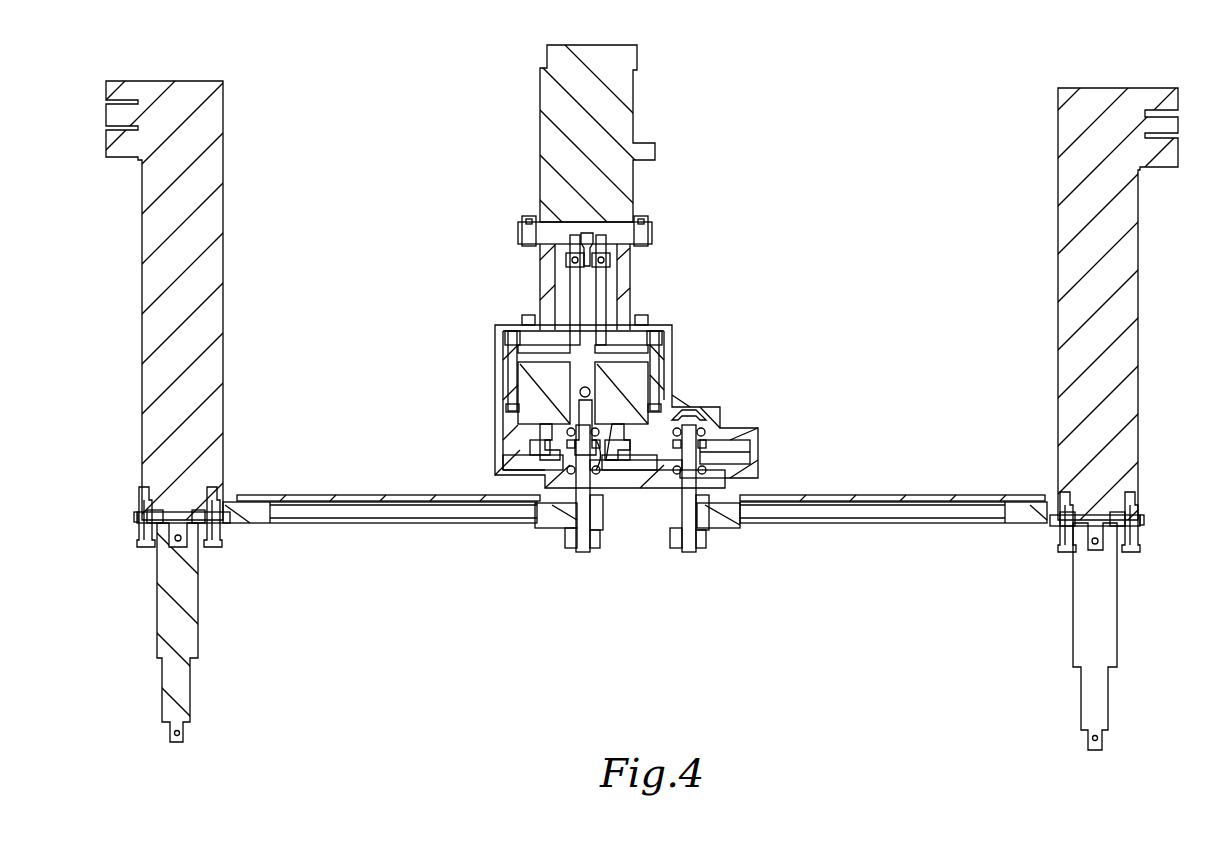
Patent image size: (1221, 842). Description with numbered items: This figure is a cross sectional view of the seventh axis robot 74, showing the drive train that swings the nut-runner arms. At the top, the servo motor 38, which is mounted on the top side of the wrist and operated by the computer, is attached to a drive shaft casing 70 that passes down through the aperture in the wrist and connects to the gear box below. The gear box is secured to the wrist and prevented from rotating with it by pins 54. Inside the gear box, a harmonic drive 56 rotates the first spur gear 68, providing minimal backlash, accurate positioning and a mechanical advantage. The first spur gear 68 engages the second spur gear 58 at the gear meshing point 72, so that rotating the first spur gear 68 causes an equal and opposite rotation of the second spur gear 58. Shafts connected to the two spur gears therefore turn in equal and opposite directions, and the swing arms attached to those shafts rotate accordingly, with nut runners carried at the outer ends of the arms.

The servo motor 38 is at (610, 108).
The pins 54 is at (526, 320).
The harmonic drive 56 is at (642, 381).
The second spur gear 58 is at (730, 456).
The first spur gear 68 is at (542, 452).
The drive shaft casing 70 is at (618, 274).
The gear meshing point 72 is at (640, 470).
The seventh axis robot 74 is at (914, 52).